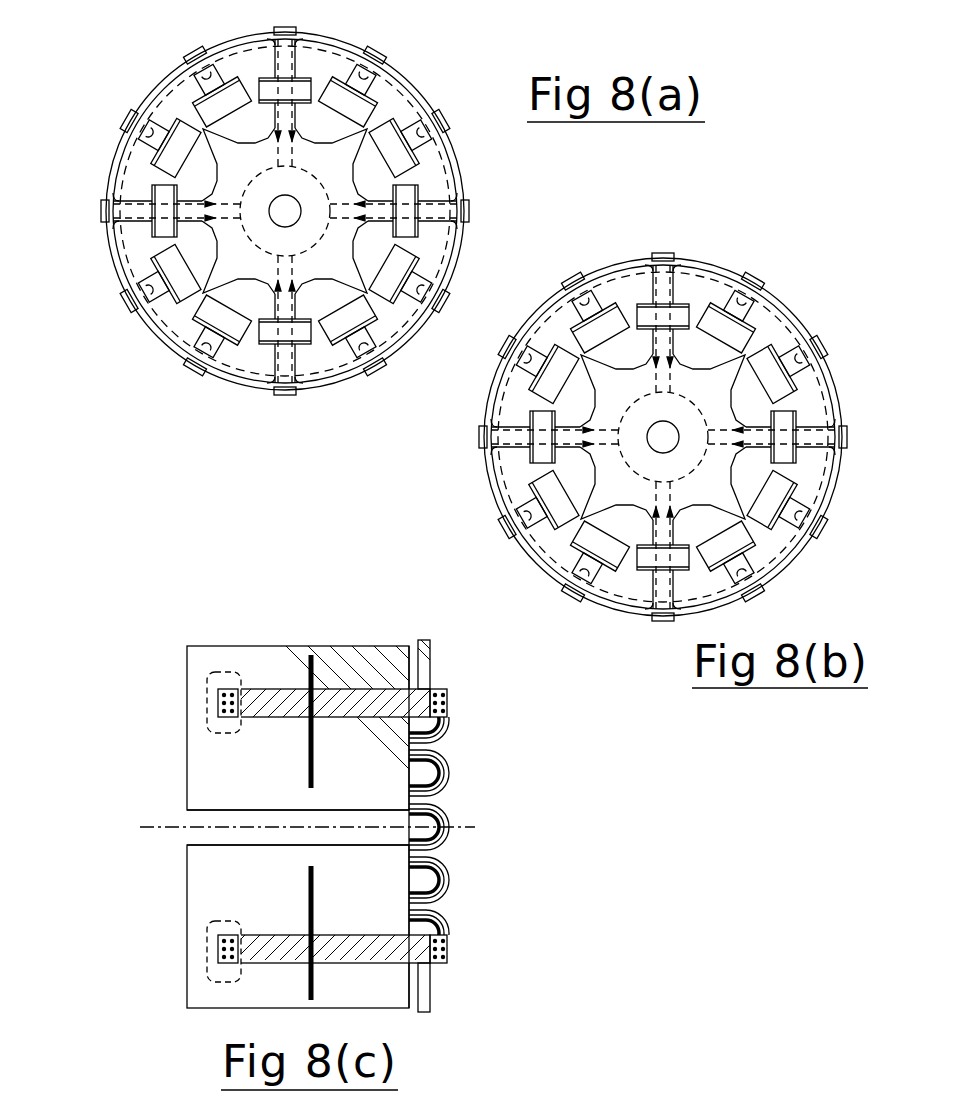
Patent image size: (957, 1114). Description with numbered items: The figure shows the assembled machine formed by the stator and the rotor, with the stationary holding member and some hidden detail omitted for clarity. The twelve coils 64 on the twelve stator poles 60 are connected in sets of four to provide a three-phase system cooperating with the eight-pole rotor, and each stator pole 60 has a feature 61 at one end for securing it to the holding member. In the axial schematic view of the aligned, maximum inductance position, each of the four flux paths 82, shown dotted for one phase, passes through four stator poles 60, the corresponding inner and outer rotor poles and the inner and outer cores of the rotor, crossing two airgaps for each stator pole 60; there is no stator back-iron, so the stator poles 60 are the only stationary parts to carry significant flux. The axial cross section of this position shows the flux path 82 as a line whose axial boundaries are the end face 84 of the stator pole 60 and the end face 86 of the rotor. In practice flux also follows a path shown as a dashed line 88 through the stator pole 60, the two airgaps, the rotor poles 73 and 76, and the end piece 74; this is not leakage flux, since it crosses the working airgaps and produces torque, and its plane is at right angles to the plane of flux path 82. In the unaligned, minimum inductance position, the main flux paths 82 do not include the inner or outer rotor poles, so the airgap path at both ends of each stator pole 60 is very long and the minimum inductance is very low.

In FIG. 8C, the stator pole 60 is at (449, 728).
In FIG. 8C, the feature 61 is at (431, 650).
In FIG. 8C, the coil 64 is at (449, 698).
In FIG. 8C, the rotor pole 73 is at (449, 947).
In FIG. 8C, the end piece 74 is at (200, 699).
In FIG. 8C, the rotor pole 76 is at (380, 975).
In FIG. 8A, the flux path 82 is at (101, 218).
In FIG. 8C, the flux path 82 is at (314, 660).
In FIG. 8C, the end face of the stator pole 84 is at (224, 673).
In FIG. 8C, the end face of the rotor 86 is at (424, 652).
In FIG. 8B, the flux path 88 is at (479, 443).
In FIG. 8C, the flux path 88 is at (207, 689).